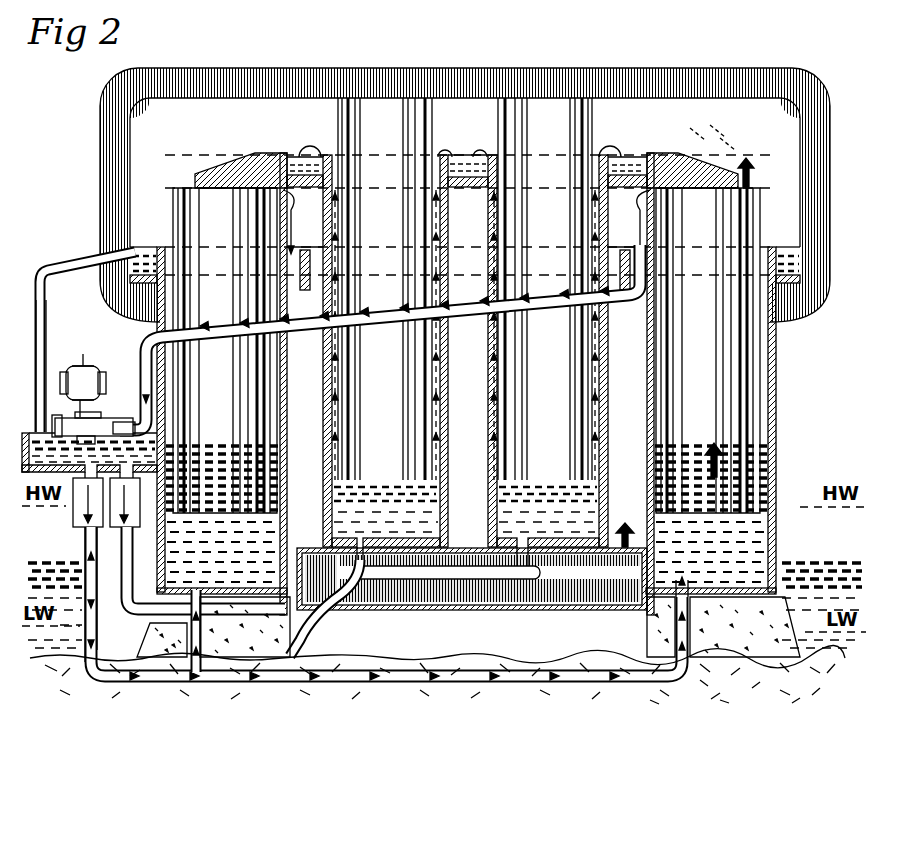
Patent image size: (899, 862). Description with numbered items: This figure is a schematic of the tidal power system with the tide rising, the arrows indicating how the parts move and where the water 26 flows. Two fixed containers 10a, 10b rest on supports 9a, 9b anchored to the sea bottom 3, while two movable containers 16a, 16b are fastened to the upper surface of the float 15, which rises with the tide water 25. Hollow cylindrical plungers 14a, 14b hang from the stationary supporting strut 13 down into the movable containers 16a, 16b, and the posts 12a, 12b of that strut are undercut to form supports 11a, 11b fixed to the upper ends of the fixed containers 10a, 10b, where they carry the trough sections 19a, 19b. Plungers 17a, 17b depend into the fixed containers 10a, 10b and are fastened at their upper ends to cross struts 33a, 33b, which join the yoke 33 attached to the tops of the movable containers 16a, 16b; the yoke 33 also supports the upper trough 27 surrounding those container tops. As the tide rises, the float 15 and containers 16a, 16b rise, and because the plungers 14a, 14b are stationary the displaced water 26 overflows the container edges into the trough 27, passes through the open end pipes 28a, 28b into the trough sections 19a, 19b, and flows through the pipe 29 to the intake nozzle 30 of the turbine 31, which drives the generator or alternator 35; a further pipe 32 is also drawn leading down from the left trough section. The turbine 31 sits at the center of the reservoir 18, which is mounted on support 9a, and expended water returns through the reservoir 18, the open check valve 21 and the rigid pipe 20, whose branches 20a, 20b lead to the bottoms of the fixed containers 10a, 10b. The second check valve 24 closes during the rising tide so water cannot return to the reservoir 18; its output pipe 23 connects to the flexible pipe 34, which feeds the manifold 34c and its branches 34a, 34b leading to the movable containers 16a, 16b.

The ground 3 is at (45, 648).
The support 9a is at (253, 648).
The support 9b is at (728, 653).
The fixed container 10a is at (290, 490).
The fixed container 10b is at (650, 478).
The support 11a is at (148, 300).
The support 11b is at (780, 322).
The post 12a is at (103, 197).
The post 12b is at (826, 180).
The supporting strut 13 is at (512, 68).
The plunger 14a is at (333, 132).
The plunger 14b is at (598, 138).
The float 15 is at (456, 575).
The movable container 16a is at (322, 430).
The movable container 16b is at (610, 414).
The plunger 17a is at (178, 228).
The plunger 17b is at (760, 228).
The reservoir 18 is at (22, 445).
The upper reservoir 19a is at (120, 296).
The upper reservoir 19b is at (788, 252).
The rigid pipe 20 is at (140, 690).
The pipe branch 20a is at (198, 640).
The fixed branch 20b is at (622, 685).
The check valve 21 is at (75, 516).
The output pipe 23 is at (206, 568).
The check valve 24 is at (140, 512).
The tide water 25 is at (812, 570).
The water 26 is at (355, 512).
The upper trough 27 is at (463, 187).
The open end pipe 28a is at (304, 380).
The open end pipe 28b is at (626, 380).
The connecting conduit 29 is at (462, 314).
The intake nozzle 30 is at (118, 420).
The turbine 31 is at (58, 428).
The pipe 32 is at (75, 268).
The yoke 33 is at (458, 156).
The cross strut 33a is at (215, 170).
The cross strut 33b is at (715, 170).
The flexible pipe 34 is at (298, 655).
The branch 34a is at (385, 575).
The branch 34b is at (532, 585).
The manifold 34c is at (480, 585).
The generator or alternator 35 is at (103, 386).